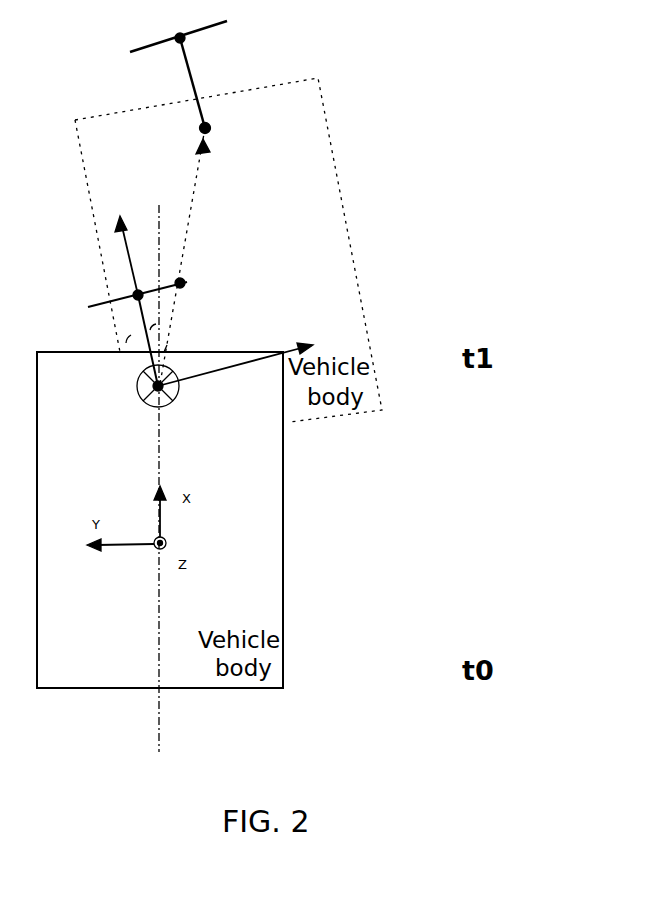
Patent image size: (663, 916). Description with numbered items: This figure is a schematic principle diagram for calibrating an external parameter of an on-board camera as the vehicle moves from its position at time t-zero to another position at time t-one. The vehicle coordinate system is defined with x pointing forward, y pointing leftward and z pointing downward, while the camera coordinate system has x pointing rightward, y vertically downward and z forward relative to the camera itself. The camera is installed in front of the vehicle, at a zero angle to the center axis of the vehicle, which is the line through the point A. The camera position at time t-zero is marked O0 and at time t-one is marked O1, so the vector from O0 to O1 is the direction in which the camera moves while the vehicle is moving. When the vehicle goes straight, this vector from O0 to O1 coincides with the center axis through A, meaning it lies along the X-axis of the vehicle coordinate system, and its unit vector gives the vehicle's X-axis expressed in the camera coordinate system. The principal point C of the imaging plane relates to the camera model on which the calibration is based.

The camera position at time t0 O0 is at (213, 361).
The camera position at time t1 O1 is at (187, 90).
The principal point C is at (137, 294).
The center axis of the vehicle A is at (167, 478).